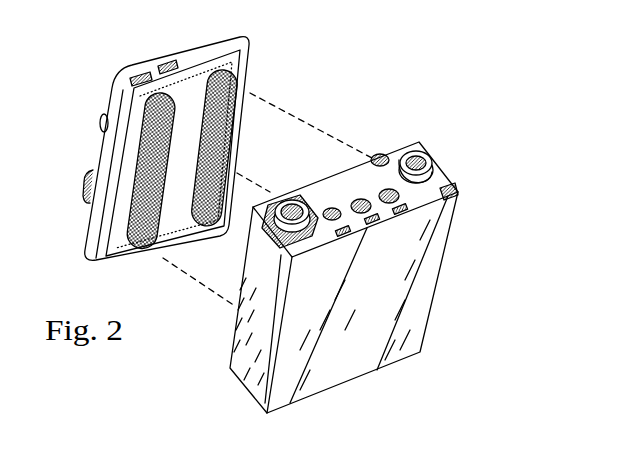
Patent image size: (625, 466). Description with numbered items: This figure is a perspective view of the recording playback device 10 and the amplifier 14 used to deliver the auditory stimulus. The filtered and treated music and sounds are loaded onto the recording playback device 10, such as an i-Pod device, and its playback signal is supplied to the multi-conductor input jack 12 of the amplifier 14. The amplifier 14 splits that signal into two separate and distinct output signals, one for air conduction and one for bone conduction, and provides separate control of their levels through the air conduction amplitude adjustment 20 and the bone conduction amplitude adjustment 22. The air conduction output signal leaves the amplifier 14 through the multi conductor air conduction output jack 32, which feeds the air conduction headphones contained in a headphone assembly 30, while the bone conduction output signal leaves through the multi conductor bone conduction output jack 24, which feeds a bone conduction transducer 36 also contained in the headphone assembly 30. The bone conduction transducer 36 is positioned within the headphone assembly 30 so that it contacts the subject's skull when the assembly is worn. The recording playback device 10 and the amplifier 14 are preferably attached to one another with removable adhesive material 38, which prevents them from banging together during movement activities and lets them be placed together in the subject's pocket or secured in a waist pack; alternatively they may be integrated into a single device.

The recording playback device 10 is at (147, 51).
The multi-conductor input jack 12 is at (332, 207).
The amplifier 14 is at (462, 178).
The air conduction amplitude adjustment 20 is at (276, 242).
The bone conduction amplitude adjustment 22 is at (415, 154).
The multi conductor bone conduction output jack 24 is at (358, 200).
The headphone assembly 30 is at (219, 124).
The multi conductor air conduction output jack 32 is at (394, 160).
The bone conduction transducer 36 is at (202, 62).
The removable adhesive material 38 is at (268, 190).